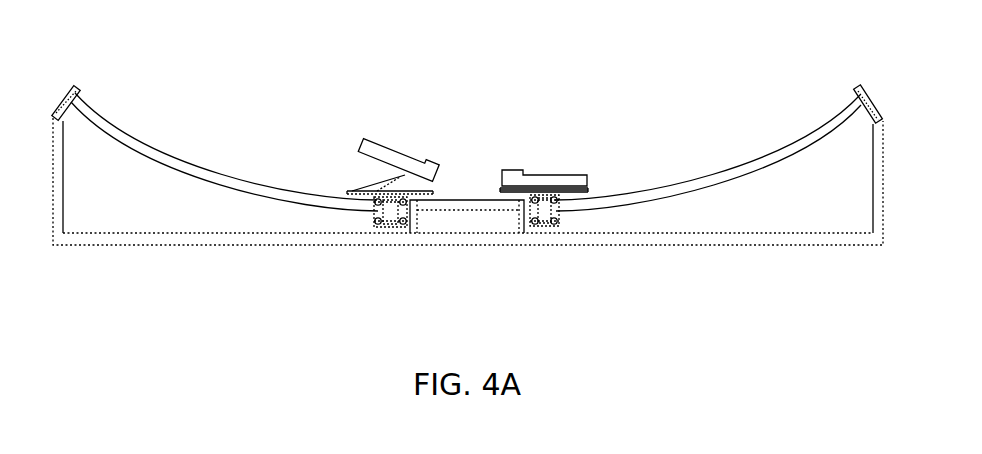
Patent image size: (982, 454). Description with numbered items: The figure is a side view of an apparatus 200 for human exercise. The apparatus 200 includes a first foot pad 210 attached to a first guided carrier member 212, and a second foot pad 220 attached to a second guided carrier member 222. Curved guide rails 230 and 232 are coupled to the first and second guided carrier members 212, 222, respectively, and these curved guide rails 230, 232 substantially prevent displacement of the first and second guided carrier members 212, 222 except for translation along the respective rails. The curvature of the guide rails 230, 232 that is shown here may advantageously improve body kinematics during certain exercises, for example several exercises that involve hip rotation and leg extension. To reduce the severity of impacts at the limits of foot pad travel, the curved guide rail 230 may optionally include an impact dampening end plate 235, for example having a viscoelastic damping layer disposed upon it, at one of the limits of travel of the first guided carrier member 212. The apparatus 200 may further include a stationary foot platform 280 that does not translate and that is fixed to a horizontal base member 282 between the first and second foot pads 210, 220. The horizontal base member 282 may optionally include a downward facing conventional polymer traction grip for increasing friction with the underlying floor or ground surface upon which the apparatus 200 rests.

The apparatus for human exercise 200 is at (573, 74).
The first foot pad 210 is at (548, 180).
The first guided carrier member 212 is at (543, 213).
The second foot pad 220 is at (396, 157).
The second guided carrier member 222 is at (383, 211).
The curved guide rail 230 is at (724, 178).
The curved guide rail 232 is at (160, 148).
The impact dampening end plate 235 is at (861, 117).
The stationary foot platform 280 is at (456, 200).
The horizontal base member 282 is at (692, 242).